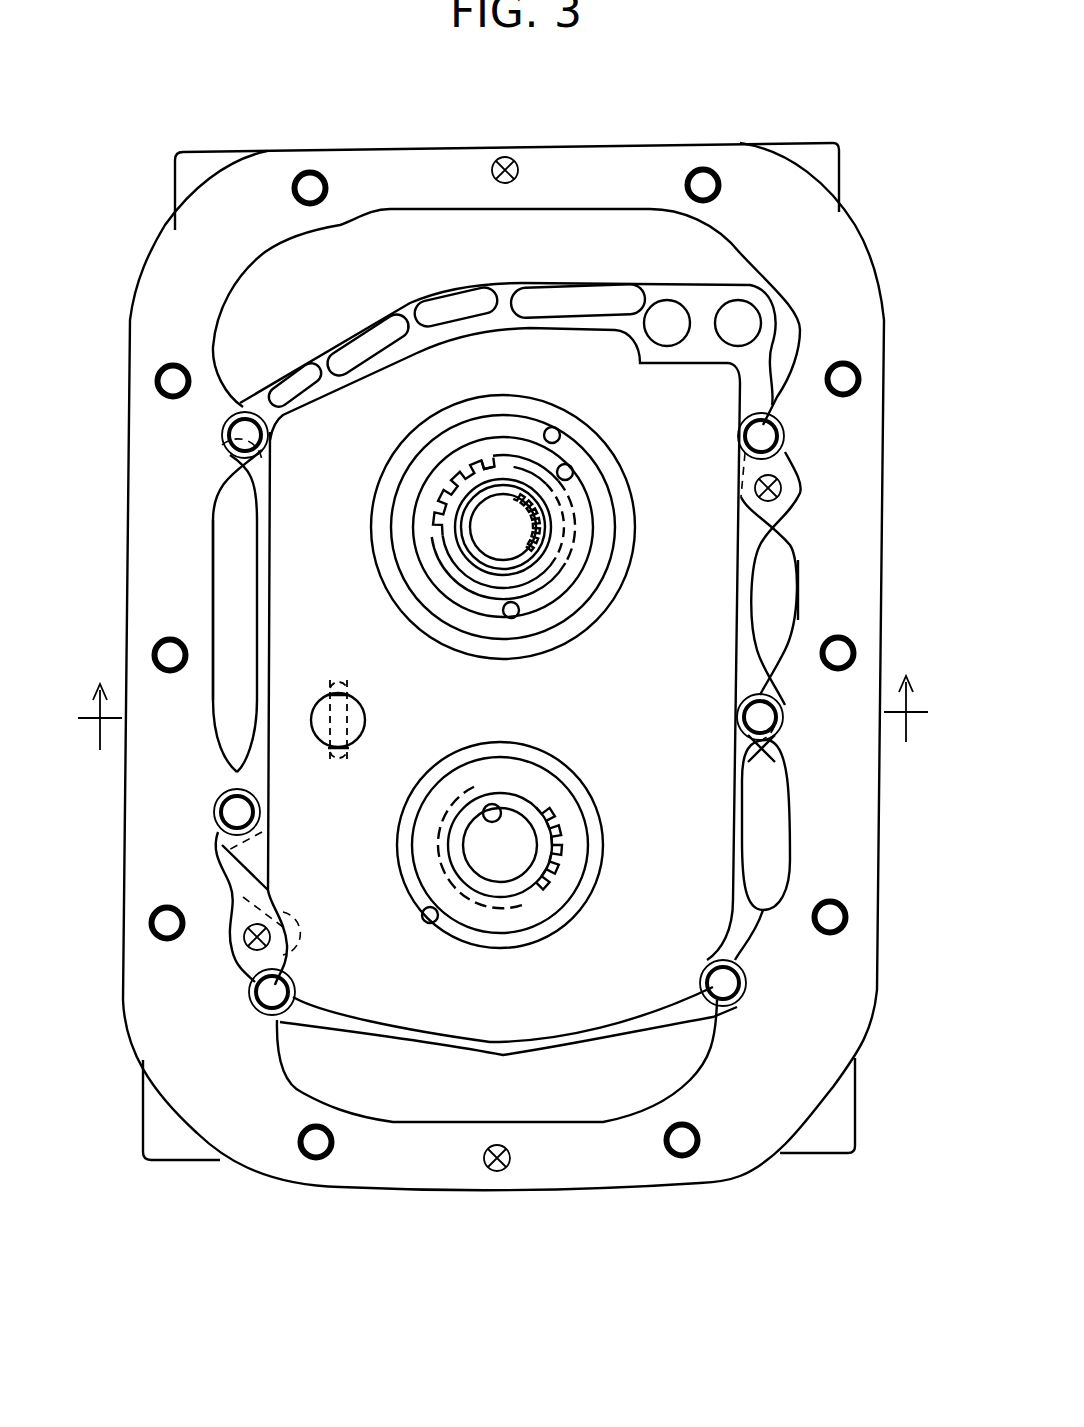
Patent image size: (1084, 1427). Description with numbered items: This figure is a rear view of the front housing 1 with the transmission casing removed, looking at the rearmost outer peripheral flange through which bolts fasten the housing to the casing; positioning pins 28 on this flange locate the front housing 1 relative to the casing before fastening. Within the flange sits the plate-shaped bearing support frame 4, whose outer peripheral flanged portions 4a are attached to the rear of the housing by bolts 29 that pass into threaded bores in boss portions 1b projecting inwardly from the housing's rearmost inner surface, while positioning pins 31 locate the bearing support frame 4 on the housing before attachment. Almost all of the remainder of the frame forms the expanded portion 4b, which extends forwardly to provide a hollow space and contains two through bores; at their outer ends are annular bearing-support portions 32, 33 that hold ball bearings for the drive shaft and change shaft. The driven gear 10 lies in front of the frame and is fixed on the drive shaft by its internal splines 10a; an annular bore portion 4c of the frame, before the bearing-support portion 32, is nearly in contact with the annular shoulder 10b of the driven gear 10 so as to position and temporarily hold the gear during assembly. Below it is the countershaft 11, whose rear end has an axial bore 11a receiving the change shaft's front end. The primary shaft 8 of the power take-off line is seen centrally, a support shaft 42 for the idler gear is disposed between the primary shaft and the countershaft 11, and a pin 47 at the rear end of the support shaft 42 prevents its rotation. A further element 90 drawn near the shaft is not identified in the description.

The front housing 1 is at (178, 1142).
The boss portions 1b is at (262, 470).
The bearing support frame 4 is at (408, 285).
The outer peripheral flanged portions 4a is at (232, 770).
The expanded portion 4b is at (628, 729).
The annular bore portion 4c is at (585, 475).
The primary shaft of power take-off transmission line 8 is at (512, 532).
The driven gear 10 is at (432, 478).
The internal splines 10a is at (488, 462).
The annular shoulder 10b is at (510, 607).
The countershaft 11 is at (510, 882).
The axial bore 11a is at (495, 806).
The positioning pins 28 is at (512, 160).
The bolts 29 is at (243, 438).
The positioning pins 31 is at (762, 505).
The annular bearing-support portion 32 is at (560, 440).
The annular bearing-support portion 33 is at (433, 920).
The support shaft 42 is at (357, 714).
The pin 47 is at (335, 763).
The splined hub 90 is at (538, 510).